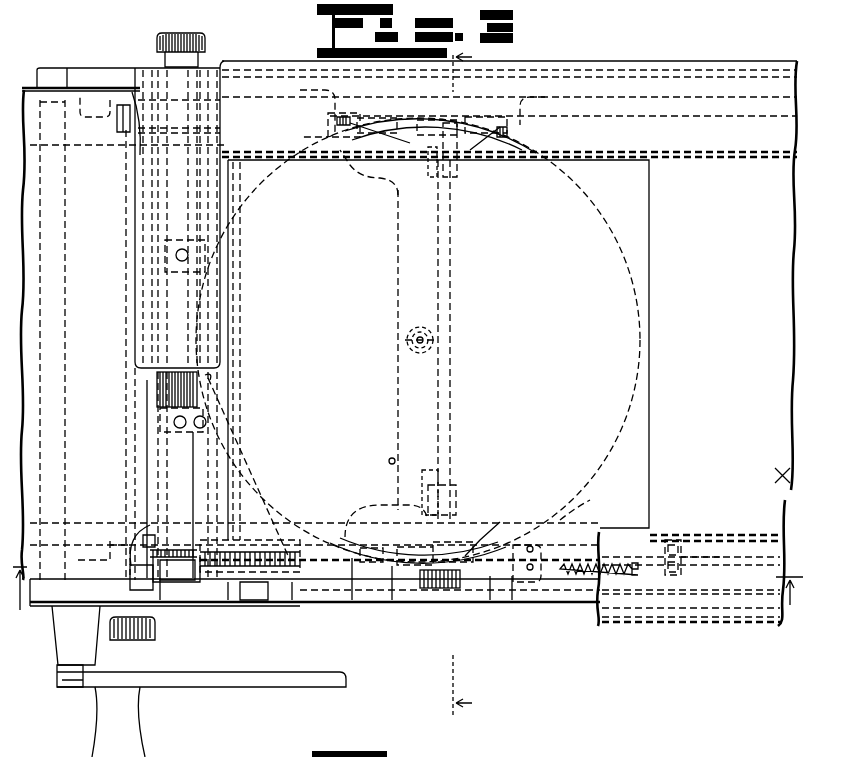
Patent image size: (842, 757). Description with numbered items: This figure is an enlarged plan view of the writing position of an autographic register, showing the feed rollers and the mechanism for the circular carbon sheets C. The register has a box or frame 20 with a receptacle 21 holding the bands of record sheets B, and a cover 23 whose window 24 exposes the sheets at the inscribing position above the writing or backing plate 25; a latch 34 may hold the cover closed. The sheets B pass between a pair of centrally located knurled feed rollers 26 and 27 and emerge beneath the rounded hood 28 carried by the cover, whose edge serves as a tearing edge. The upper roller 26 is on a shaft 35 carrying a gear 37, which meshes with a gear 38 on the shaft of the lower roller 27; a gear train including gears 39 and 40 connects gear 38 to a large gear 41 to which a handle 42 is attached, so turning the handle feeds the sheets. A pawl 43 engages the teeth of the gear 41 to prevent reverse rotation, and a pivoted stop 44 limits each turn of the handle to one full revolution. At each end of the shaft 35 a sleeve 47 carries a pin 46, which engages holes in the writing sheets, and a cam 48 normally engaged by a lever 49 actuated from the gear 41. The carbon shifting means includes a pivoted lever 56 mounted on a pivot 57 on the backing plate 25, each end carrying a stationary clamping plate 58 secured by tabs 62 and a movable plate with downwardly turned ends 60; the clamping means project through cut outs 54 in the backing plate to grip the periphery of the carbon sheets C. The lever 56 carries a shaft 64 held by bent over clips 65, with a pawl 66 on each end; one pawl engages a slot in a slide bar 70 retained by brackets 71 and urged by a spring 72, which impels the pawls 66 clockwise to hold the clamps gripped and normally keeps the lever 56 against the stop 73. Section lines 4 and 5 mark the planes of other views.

The section line 4- 4 is at (408, 602).
The section line 5- 5 is at (472, 381).
The box or frame 20 is at (228, 603).
The container or receptacle 21 is at (430, 214).
The cover 23 is at (710, 135).
The window 24 is at (651, 470).
The writing or backing plate 25 is at (292, 603).
The feed roller 26 is at (160, 383).
The feed roller 27 is at (215, 378).
The rounded hood 28 is at (135, 313).
The latch 34 is at (133, 567).
The shaft 35 is at (167, 440).
The gear 37 is at (190, 580).
The gear 38 is at (170, 580).
The gear 39 is at (270, 540).
The gear 40 is at (252, 603).
The large gear 41 is at (350, 580).
The handle 42 is at (247, 690).
The pawl 43 is at (392, 568).
The pivoted stop 44 is at (77, 678).
The pins 46 is at (205, 247).
The sleeve 47 is at (200, 212).
The cam 48 is at (147, 530).
The lever 49 is at (150, 537).
The cut out 54 is at (520, 578).
The pivoted lever 56 is at (398, 404).
The pivot 57 is at (408, 342).
The stationary clamping plate 58 is at (487, 147).
The downwardly turned ends 60 is at (522, 138).
The tabs 62 is at (366, 126).
The shaft 64 is at (438, 304).
The bent over clips or tabs 65 is at (457, 192).
The pawl 66 is at (440, 120).
The slidable member or slide bar 70 is at (492, 578).
The brackets 71 is at (556, 548).
The spring 72 is at (617, 577).
The stop 73 is at (389, 463).
The writing or record sheets B is at (590, 522).
The carbon sheets C is at (614, 228).